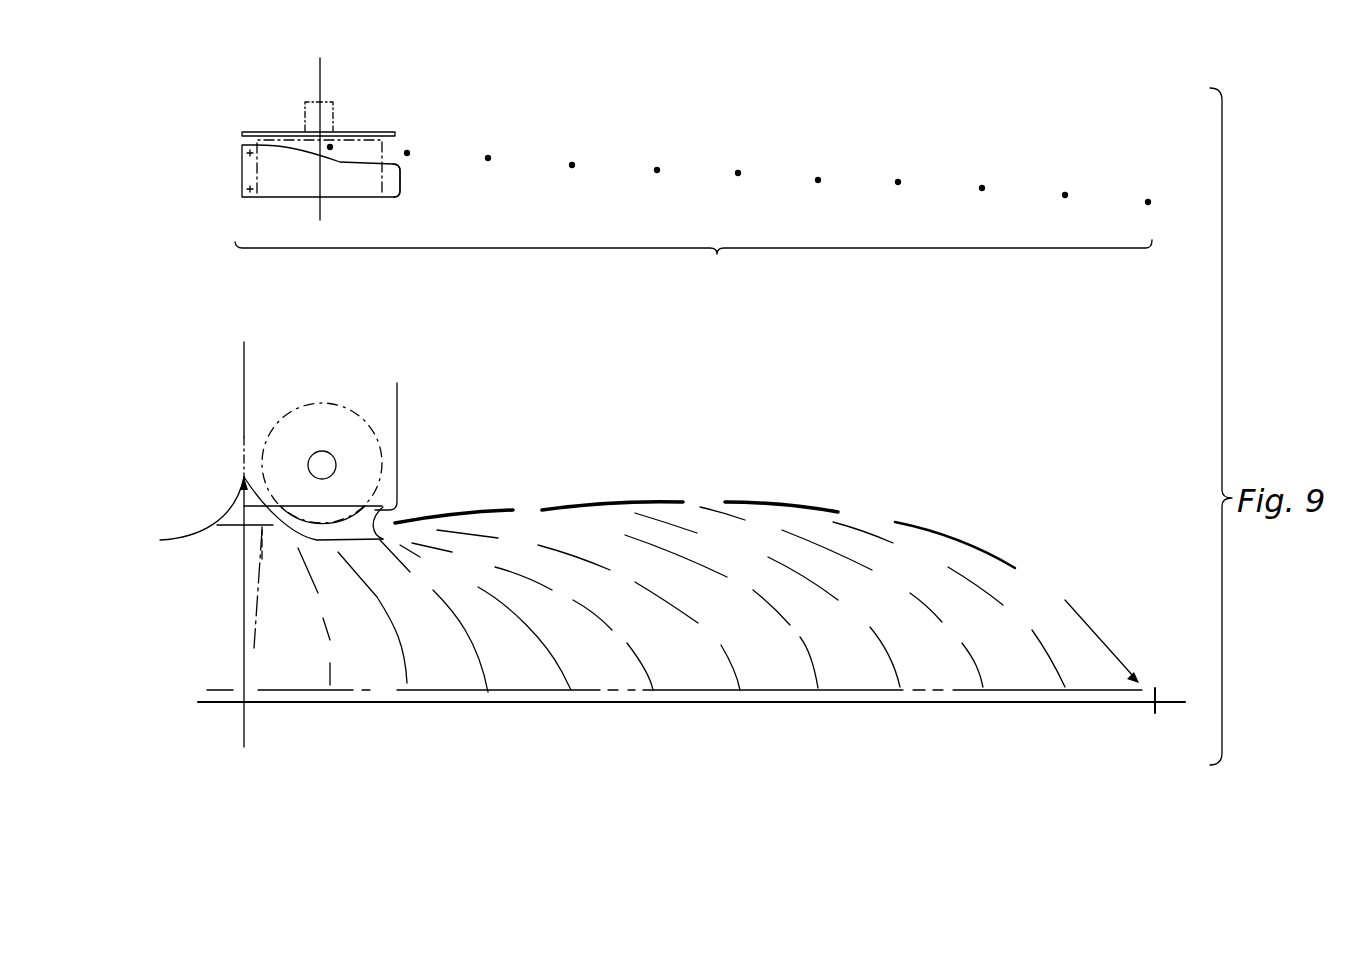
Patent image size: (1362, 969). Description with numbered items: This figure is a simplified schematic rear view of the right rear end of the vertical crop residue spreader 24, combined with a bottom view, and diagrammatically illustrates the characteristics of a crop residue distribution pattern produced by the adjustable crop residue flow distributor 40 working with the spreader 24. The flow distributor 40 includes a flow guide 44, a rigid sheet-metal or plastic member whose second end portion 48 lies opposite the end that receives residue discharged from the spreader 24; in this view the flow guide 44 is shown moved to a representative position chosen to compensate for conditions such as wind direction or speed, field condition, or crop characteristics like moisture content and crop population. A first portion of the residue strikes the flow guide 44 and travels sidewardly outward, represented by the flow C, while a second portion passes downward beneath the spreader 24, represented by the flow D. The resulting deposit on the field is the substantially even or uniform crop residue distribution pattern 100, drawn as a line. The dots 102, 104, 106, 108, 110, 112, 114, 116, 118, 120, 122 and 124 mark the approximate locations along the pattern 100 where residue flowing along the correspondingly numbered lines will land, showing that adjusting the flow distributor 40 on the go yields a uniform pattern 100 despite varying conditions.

The vertical crop residue spreader 24 is at (268, 124).
The adjustable crop residue flow distributor 40 is at (282, 200).
The flow guide 44 is at (387, 197).
The second end portion 48 is at (400, 182).
The crop residue distribution pattern 100 is at (1087, 688).
The dot 102 is at (240, 140).
The dot 104 is at (330, 147).
The dot 106 is at (407, 153).
The dot 108 is at (488, 158).
The dot 110 is at (572, 165).
The dot 112 is at (657, 170).
The dot 114 is at (738, 173).
The dot 116 is at (818, 180).
The dot 118 is at (898, 182).
The dot 120 is at (982, 188).
The dot 122 is at (1065, 195).
The dot 124 is at (1148, 202).
The oppositely directed arrows C is at (1095, 623).
The downwardly directed arrows D is at (257, 605).